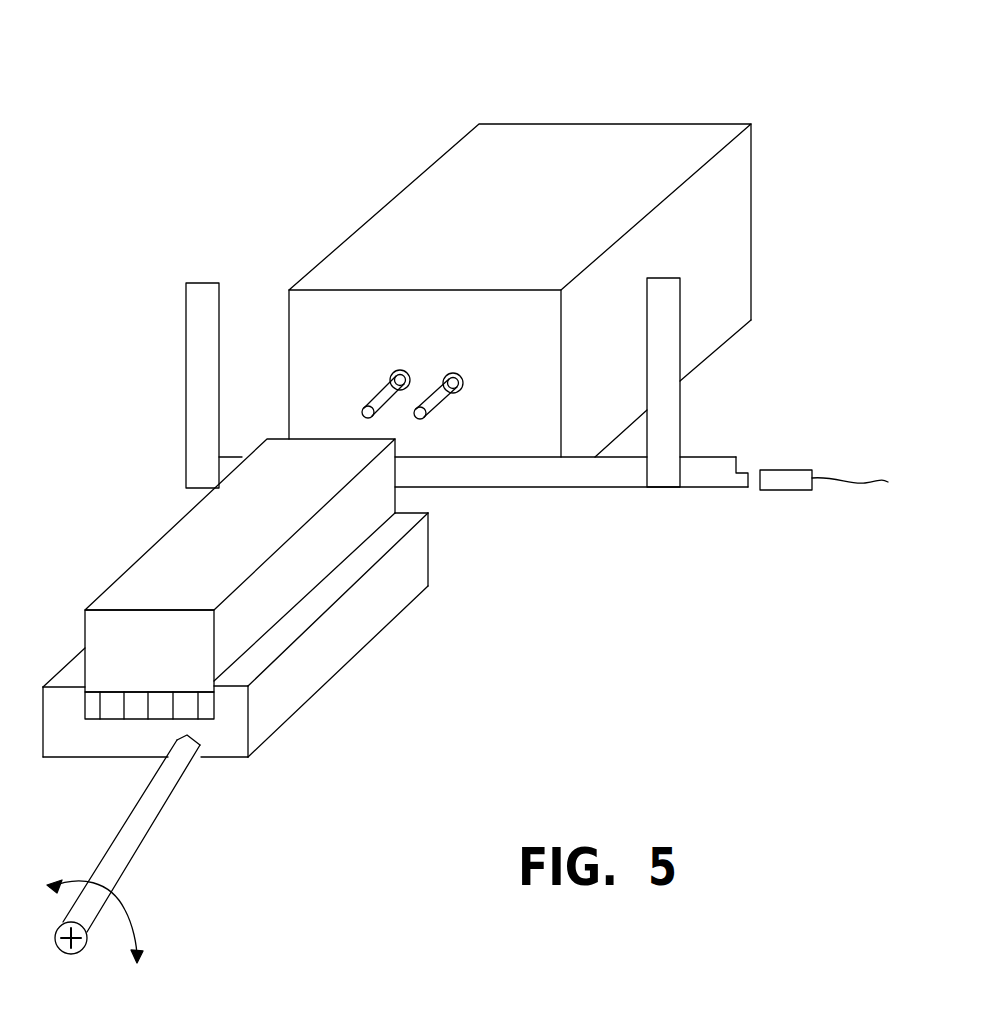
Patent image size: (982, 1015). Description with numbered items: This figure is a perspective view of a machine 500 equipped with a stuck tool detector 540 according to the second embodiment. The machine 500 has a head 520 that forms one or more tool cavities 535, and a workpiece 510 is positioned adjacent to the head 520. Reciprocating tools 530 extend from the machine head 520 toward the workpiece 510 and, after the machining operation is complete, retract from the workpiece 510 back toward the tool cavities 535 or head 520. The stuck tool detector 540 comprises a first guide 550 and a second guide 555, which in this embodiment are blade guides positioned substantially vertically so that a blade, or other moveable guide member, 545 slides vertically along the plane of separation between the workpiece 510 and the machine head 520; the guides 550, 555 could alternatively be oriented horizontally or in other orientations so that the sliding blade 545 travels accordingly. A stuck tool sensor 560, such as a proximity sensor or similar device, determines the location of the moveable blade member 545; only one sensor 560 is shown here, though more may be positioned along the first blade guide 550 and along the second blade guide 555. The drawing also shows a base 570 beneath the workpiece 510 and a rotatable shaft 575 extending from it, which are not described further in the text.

The machine 500 is at (814, 53).
The workpiece 510 is at (153, 575).
The head 520 is at (730, 237).
The reciprocating tools 530 is at (383, 395).
The tool cavities 535 is at (401, 377).
The stuck tool detector 540 is at (663, 487).
The blade 545 is at (467, 475).
The first guide 550 is at (667, 342).
The second guide 555 is at (200, 352).
The stuck tool sensor 560 is at (790, 482).
The base 570 is at (303, 676).
The drive shaft 575 is at (127, 845).